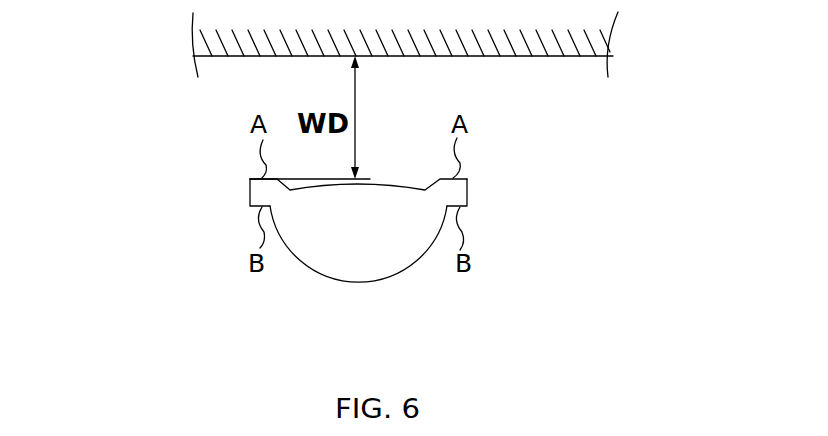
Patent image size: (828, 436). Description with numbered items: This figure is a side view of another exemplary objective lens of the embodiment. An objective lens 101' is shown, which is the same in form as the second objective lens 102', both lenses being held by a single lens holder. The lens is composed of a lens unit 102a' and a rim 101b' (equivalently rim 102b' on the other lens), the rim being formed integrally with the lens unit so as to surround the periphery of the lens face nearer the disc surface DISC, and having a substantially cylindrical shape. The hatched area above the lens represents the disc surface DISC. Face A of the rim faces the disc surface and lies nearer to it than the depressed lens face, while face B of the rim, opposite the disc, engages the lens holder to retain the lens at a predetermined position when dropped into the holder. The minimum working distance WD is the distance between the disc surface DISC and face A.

The objective lens 101' is at (372, 204).
The objective lens 102' is at (372, 181).
The rim 101b' is at (372, 180).
The rim 102b' is at (358, 192).
The lens unit 102a' is at (377, 135).
The disc surface DISC is at (585, 58).